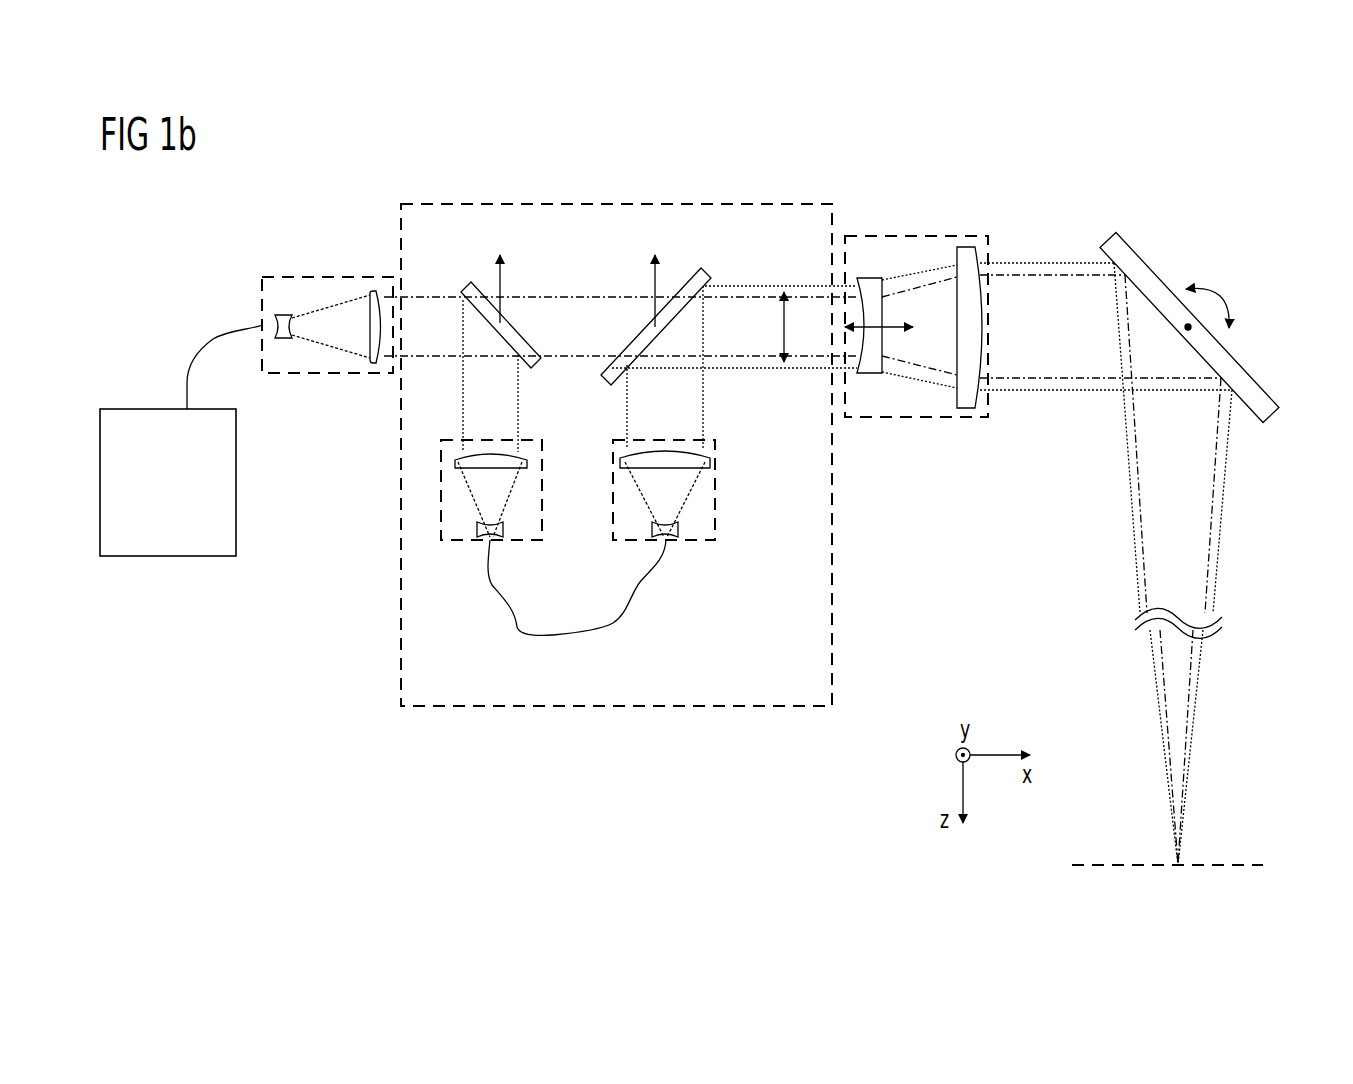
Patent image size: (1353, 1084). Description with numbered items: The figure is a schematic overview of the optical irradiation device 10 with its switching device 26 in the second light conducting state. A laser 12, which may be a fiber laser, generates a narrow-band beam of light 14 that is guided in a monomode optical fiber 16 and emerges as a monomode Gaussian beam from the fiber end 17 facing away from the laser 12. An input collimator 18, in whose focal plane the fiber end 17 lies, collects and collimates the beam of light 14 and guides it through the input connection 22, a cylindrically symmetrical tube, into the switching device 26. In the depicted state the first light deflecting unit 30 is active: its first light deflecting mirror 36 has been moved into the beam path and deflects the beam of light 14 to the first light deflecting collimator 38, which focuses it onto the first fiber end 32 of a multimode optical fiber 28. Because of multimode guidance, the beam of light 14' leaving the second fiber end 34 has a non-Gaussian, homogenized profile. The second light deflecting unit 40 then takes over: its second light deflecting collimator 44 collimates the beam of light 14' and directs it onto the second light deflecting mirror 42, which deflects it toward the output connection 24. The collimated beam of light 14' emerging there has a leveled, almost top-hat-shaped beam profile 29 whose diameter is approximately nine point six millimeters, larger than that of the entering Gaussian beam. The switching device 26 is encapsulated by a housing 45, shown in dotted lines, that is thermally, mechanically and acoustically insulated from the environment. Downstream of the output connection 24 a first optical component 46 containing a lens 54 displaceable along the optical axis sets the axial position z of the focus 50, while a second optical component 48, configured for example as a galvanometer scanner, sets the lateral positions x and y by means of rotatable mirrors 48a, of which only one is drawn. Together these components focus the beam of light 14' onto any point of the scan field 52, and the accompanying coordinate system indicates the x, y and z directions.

The optical irradiation device 10 is at (653, 197).
The laser 12 is at (236, 481).
The beam of light 14 is at (802, 550).
The beam of light 14' is at (937, 564).
The monomode optical fiber 16 is at (185, 367).
The fiber end 17 is at (262, 325).
The input collimator 18 is at (333, 376).
The input connection 22 is at (405, 315).
The output connection 24 is at (822, 315).
The switching device 26 is at (850, 532).
The multimode optical fiber 28 is at (573, 635).
The beam profile 29 is at (761, 327).
The first light deflecting unit 30 is at (514, 286).
The first fiber end 32 is at (492, 543).
The second fiber end 34 is at (667, 543).
The first light deflecting mirror 36 is at (520, 333).
The first light deflecting collimator 38 is at (542, 502).
The second light deflecting unit 40 is at (633, 286).
The second light deflecting mirror 42 is at (643, 323).
The second light deflecting collimator 44 is at (715, 502).
The housing 45 is at (613, 707).
The first optical component 46 is at (912, 235).
The second optical component 48 is at (1191, 248).
The mirror 48a is at (1250, 370).
The focus 50 is at (1173, 865).
The scan field 52 is at (1235, 865).
The lens 54 is at (882, 305).